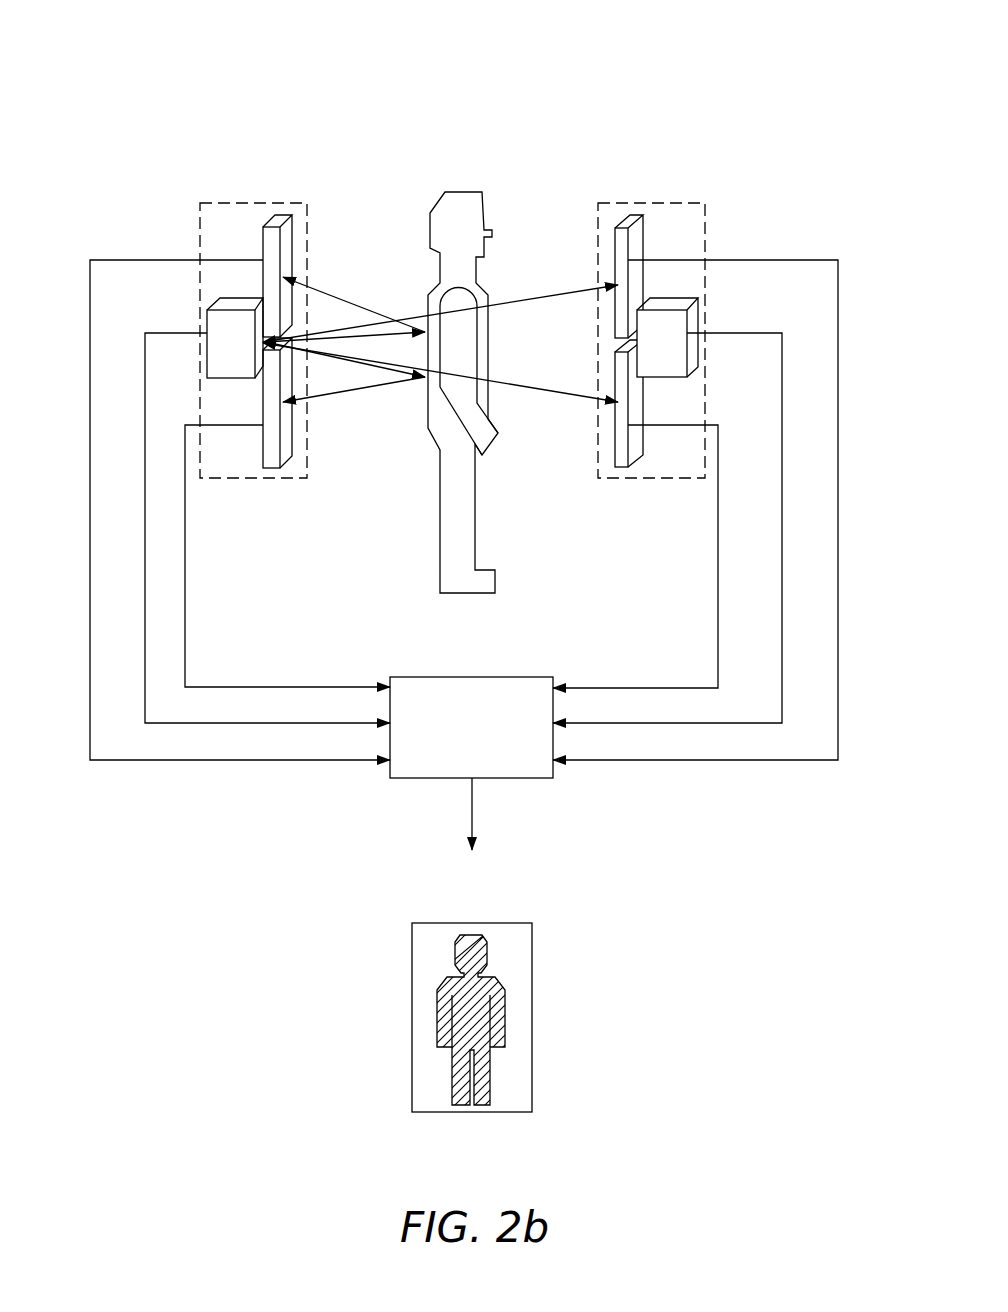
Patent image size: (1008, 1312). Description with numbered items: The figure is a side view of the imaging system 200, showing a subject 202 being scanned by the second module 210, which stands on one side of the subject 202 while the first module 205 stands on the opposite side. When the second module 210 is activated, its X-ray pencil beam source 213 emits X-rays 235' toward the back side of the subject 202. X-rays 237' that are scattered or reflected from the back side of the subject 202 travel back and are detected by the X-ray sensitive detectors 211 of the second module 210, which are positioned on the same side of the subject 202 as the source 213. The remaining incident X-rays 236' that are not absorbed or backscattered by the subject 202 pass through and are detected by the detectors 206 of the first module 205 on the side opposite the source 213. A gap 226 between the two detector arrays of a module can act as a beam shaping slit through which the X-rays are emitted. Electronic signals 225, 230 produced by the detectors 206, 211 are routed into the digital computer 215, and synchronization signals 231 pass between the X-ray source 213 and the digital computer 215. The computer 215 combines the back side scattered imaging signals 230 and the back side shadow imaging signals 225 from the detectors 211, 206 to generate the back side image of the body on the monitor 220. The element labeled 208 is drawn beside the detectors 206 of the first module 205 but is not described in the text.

The imaging system 200 is at (258, 106).
The subject 202 is at (468, 198).
The first module 205 is at (688, 200).
The detectors 206 is at (640, 247).
The radiation source 208 is at (695, 318).
The second module 210 is at (200, 228).
The X-ray sensitive detectors 211 is at (270, 252).
The X-ray pencil beam source 213 is at (222, 327).
The digital computer 215 is at (383, 773).
The monitor 220 is at (533, 1002).
The electronic signals 225 is at (838, 555).
The gap 226 is at (617, 342).
The electronic signals 230 is at (90, 538).
The synchronization signals 231 is at (225, 722).
The pencil beams 235' is at (346, 368).
The remaining incident X-rays 236' is at (440, 321).
The scattered X-rays 237' is at (345, 298).